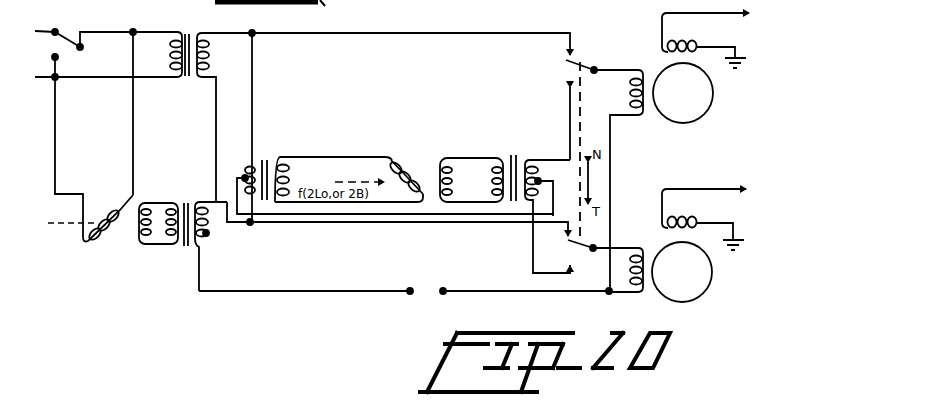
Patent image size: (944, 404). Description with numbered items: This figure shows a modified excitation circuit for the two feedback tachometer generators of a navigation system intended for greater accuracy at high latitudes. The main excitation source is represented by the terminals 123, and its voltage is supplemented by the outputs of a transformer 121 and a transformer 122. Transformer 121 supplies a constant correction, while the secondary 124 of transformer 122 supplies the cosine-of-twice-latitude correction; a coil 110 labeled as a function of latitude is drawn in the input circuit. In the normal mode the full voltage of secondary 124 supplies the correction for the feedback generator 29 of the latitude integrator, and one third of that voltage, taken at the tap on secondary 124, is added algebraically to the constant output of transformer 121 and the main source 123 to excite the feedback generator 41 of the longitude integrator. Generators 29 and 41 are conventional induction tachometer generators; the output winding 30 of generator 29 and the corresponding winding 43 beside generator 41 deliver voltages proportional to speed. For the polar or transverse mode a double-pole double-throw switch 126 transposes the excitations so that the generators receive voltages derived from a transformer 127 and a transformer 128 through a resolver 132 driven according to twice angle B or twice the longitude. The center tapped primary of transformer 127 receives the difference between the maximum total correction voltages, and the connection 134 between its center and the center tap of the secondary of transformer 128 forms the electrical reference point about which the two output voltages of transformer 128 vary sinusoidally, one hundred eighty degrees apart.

The variable inductance coil 110 is at (112, 250).
The transformer 121 is at (189, 31).
The transformer 122 is at (189, 248).
The secondary 124 is at (212, 202).
The transformer 127 is at (263, 161).
The resolver 132 is at (421, 172).
The transformer 128 is at (533, 255).
The connection 134 is at (482, 215).
The double-pole double-throw switch 126 is at (581, 62).
The feedback generator 41 is at (692, 154).
The relay coil 43 is at (681, 27).
The feedback generator 29 is at (695, 330).
The output winding 30 is at (680, 204).
The terminals 123 is at (443, 293).